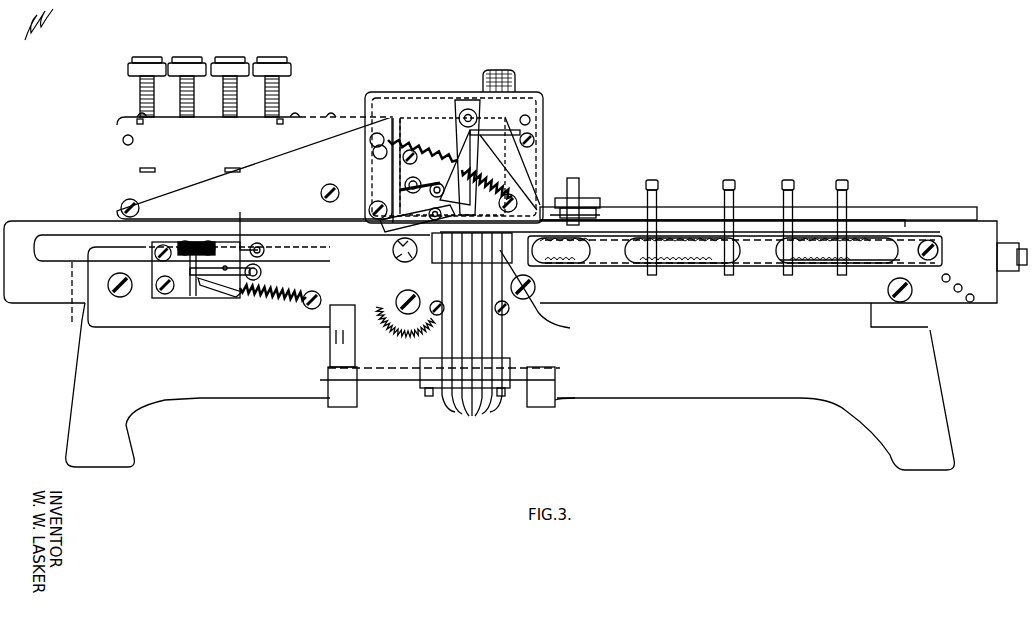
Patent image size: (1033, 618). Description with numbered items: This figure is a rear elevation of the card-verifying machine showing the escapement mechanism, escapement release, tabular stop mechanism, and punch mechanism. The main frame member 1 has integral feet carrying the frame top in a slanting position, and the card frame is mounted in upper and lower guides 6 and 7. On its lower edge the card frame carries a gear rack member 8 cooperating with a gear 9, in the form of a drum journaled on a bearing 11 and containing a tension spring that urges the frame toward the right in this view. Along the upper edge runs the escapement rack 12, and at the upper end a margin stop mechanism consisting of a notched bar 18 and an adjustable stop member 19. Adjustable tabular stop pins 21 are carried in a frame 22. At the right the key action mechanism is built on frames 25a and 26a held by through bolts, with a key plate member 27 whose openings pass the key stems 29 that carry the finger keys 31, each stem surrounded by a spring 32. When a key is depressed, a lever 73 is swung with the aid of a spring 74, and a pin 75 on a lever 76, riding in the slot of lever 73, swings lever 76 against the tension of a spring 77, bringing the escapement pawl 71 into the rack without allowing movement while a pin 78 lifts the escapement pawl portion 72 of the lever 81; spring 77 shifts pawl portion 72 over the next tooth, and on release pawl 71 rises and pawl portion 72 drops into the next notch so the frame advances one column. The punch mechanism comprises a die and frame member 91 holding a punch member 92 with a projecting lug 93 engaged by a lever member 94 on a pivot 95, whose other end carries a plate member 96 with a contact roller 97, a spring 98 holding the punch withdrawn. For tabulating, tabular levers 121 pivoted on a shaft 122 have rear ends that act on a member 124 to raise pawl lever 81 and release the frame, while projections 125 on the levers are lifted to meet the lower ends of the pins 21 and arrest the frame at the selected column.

The main frame member 1 is at (795, 396).
The upper guide 6 is at (968, 231).
The lower guide 7 is at (945, 305).
The gear rack member 8 is at (708, 266).
The gear 9 is at (400, 340).
The bearing 11 is at (395, 308).
The escapement rack 12 is at (677, 248).
The notched bar 18 is at (871, 207).
The adjustable stop member 19 is at (578, 203).
The tabular stop pins 21 is at (842, 185).
The frame 22 is at (780, 272).
The frame 25a is at (125, 158).
The frame 26a is at (545, 135).
The key plate member 27 is at (171, 117).
The key stems 29 is at (140, 92).
The finger keys 31 is at (268, 58).
The spring 32 is at (280, 94).
The escapement pawl 71 is at (412, 212).
The escapement pawl portion 72 is at (430, 186).
The lever 73 is at (450, 185).
The spring 74 is at (445, 152).
The pin 75 is at (420, 152).
The lever 76 is at (455, 178).
The spring 77 is at (490, 190).
The pin 78 is at (495, 250).
The lever 81 is at (492, 173).
The die and frame member 91 is at (175, 298).
The punch member 92 is at (200, 296).
The projecting lug 93 is at (190, 270).
The lever member 94 is at (228, 283).
The pivot 95 is at (262, 274).
The plate member 96 is at (240, 245).
The contact roller 97 is at (262, 244).
The spring 98 is at (282, 300).
The tabular levers 121 is at (472, 335).
The shaft 122 is at (518, 385).
The member 124 is at (432, 245).
The projections 125 is at (545, 294).